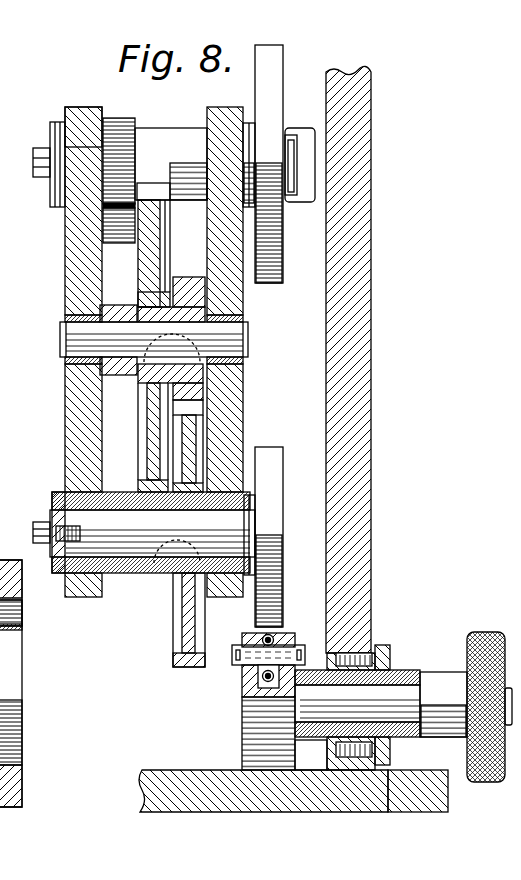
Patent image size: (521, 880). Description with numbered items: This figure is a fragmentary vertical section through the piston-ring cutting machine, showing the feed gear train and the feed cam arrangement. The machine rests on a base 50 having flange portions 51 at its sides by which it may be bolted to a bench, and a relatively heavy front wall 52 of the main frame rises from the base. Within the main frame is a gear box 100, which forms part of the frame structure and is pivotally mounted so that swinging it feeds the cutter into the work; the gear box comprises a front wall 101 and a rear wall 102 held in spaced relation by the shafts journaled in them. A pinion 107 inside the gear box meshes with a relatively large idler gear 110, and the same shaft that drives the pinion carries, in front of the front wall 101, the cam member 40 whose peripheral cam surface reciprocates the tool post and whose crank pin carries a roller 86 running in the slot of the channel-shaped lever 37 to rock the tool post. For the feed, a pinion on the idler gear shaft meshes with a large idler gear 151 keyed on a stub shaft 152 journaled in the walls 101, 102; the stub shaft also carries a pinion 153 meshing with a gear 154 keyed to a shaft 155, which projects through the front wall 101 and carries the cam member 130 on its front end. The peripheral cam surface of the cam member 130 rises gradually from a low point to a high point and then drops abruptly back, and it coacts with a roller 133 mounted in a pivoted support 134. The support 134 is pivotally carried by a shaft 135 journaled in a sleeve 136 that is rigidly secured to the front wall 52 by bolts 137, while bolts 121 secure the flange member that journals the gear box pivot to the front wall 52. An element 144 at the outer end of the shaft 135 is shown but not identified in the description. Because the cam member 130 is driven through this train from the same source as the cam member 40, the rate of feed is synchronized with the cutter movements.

The lever 37 is at (288, 136).
The cam member 40 is at (268, 283).
The base 50 is at (163, 773).
The flange portions 51 is at (448, 796).
The front wall 52 is at (352, 397).
The roller 86 is at (291, 192).
The gear box 100 is at (62, 234).
The front wall 101 is at (233, 406).
The rear wall 102 is at (72, 413).
The pinion 107 is at (122, 128).
The idler gear 110 is at (103, 241).
The bolts 121 is at (23, 612).
The cam member 130 is at (275, 483).
The roller 133 is at (240, 685).
The pivoted support 134 is at (247, 723).
The shaft 135 is at (402, 697).
The sleeve 136 is at (398, 686).
The bolts 137 is at (393, 672).
The knob 144 is at (490, 632).
The idler gear 151 is at (153, 400).
The stub shaft 152 is at (107, 353).
The pinion 153 is at (187, 278).
The gear 154 is at (185, 631).
The shaft 155 is at (145, 543).